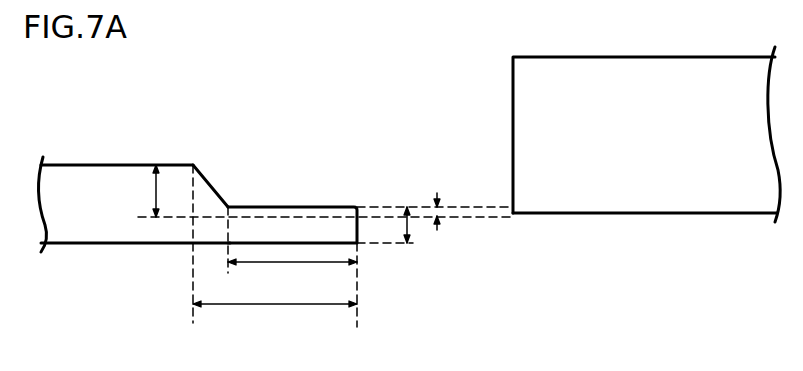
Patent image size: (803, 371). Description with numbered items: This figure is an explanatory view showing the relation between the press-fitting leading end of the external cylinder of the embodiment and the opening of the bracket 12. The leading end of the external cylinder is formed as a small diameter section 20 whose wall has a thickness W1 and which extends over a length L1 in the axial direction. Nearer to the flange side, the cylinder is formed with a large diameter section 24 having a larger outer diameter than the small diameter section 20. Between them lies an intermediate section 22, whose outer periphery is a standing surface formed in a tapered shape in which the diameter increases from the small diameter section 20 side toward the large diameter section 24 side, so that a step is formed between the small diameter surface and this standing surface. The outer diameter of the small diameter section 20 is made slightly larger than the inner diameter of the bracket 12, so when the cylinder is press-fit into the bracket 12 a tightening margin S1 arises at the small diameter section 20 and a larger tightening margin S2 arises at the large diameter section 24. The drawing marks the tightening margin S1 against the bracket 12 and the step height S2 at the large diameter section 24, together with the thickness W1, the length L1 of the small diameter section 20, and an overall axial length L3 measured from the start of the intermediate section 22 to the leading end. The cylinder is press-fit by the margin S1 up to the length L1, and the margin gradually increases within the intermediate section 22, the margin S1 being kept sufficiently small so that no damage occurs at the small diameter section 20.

The bracket 12 is at (623, 57).
The small diameter section 20 is at (270, 204).
The intermediate section 22 is at (220, 165).
The large diameter section 24 is at (80, 163).
The tightening margin of the small diameter section S1 is at (437, 211).
The tightening margin of the large diameter section S2 is at (155, 192).
The thickness of the small diameter section W1 is at (407, 225).
The length of the small diameter section L1 is at (287, 263).
The length L3 is at (273, 305).